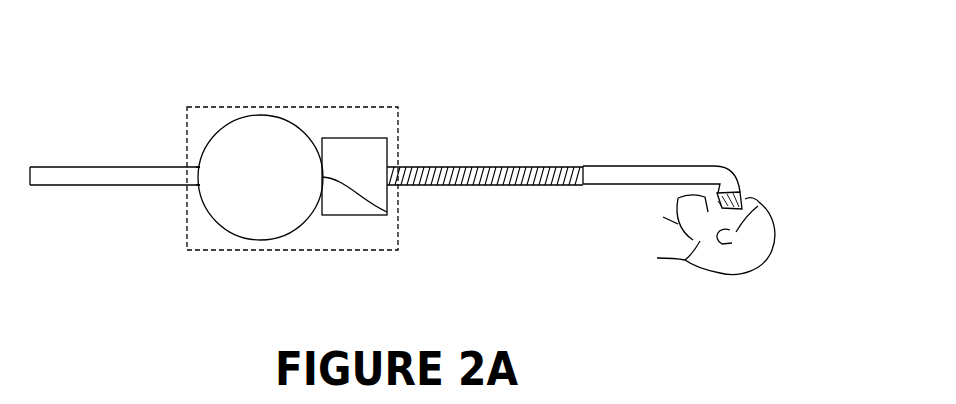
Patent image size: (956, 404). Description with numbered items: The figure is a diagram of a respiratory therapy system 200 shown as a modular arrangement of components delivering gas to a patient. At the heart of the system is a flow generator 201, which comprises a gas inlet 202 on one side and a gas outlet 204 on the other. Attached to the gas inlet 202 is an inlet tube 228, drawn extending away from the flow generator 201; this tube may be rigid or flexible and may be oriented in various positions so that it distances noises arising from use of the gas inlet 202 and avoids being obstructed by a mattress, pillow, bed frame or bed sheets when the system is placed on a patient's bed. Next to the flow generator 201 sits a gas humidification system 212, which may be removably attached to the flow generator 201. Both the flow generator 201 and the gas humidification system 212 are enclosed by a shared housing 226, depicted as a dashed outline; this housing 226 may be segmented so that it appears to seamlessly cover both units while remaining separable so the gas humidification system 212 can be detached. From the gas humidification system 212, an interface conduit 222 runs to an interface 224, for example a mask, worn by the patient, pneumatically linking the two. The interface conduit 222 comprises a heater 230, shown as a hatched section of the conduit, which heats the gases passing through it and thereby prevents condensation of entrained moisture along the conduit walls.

The respiratory therapy system 200 is at (438, 68).
The flow generator 201 is at (253, 115).
The gas inlet 202 is at (199, 168).
The gas outlet 204 is at (387, 212).
The gas humidification system 212 is at (348, 138).
The interface conduit 222 is at (617, 165).
The interface 224 is at (738, 190).
The housing 226 is at (292, 103).
The inlet tube 228 is at (90, 166).
The heater 230 is at (478, 168).